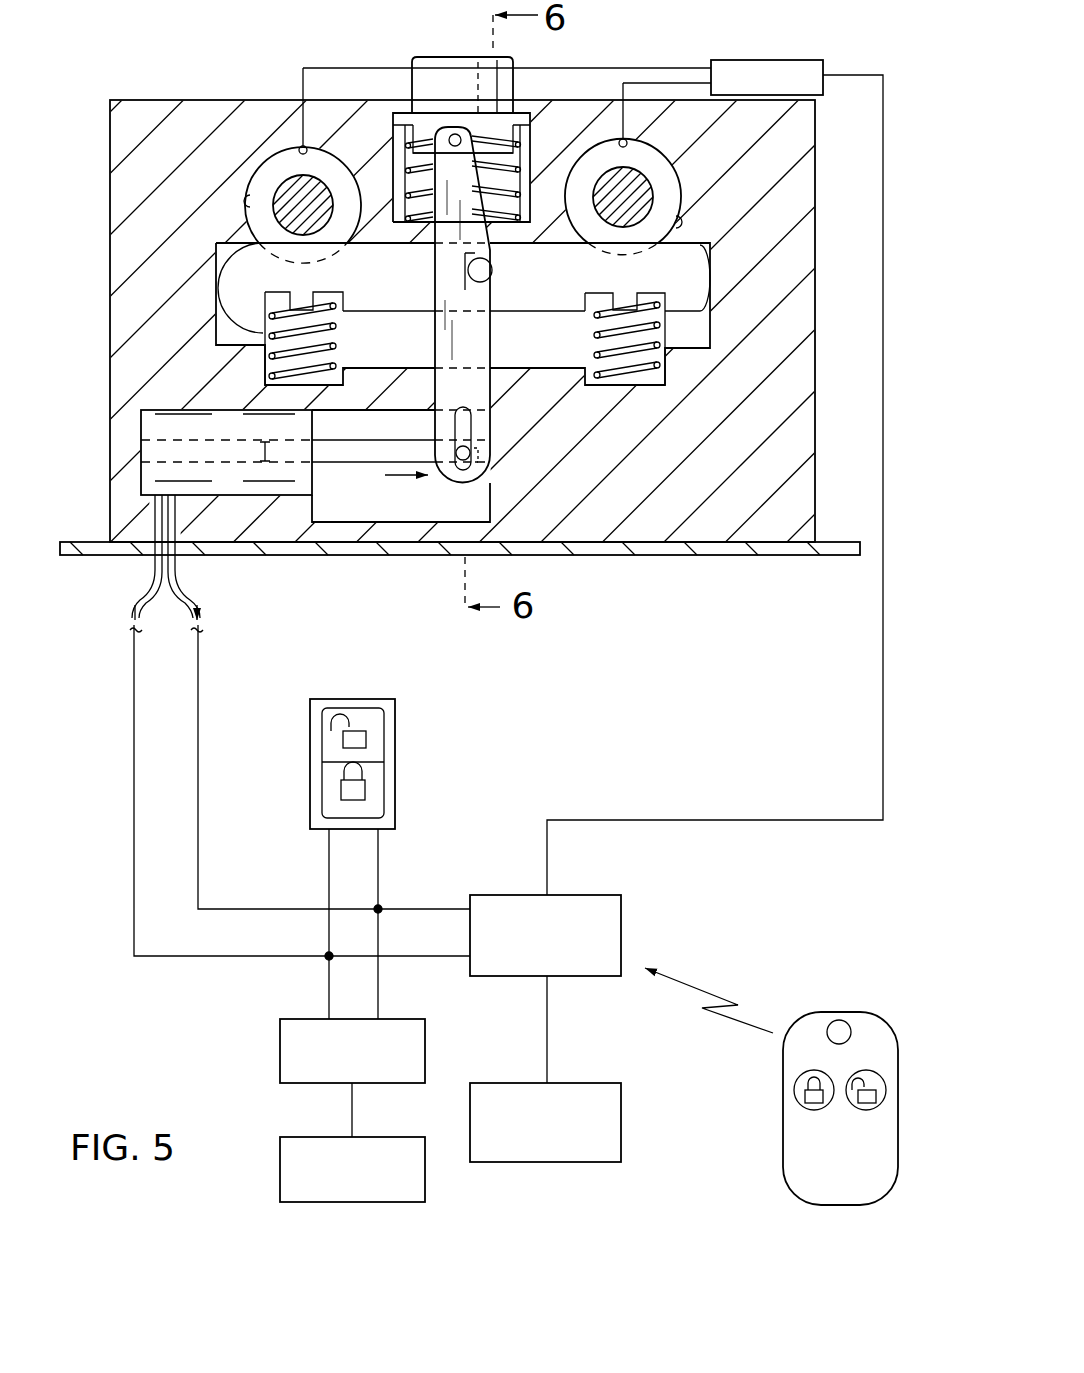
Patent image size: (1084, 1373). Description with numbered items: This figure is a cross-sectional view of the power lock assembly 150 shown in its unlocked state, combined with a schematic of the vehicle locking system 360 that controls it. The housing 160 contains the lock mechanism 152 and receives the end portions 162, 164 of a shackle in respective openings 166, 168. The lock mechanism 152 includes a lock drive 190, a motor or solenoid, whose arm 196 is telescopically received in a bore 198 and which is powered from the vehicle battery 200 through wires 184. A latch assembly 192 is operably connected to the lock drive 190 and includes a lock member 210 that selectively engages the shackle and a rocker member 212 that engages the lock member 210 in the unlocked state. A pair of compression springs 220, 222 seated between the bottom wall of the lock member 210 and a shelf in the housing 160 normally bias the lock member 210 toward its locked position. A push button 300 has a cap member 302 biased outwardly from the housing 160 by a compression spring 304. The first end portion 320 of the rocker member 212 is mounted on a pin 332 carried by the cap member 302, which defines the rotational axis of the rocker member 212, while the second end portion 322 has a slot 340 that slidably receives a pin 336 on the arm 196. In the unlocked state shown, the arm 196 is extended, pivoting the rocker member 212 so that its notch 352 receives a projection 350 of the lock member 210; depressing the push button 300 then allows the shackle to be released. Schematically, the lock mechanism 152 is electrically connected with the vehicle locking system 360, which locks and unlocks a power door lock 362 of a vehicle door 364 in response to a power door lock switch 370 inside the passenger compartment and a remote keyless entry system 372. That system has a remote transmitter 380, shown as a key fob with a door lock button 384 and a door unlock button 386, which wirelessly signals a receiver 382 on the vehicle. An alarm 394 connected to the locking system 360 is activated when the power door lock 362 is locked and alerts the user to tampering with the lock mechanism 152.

The power lock assembly 150 is at (183, 88).
The lock mechanism 152 is at (208, 282).
The housing 160 is at (122, 143).
The shackle end portion 162 is at (266, 155).
The shackle end portion 164 is at (680, 183).
The opening 166 is at (248, 198).
The opening 168 is at (681, 222).
The wires 184 is at (205, 610).
The lock drive 190 is at (143, 480).
The latch assembly 192 is at (637, 388).
The arm 196 is at (340, 455).
The bore 198 is at (148, 447).
The vehicle battery 200 is at (622, 1128).
The lock member 210 is at (702, 275).
The rocker member 212 is at (488, 384).
The compression spring 220 is at (270, 330).
The compression spring 222 is at (668, 330).
The push button 300 is at (410, 62).
The cap member 302 is at (515, 62).
The compression spring 304 is at (537, 152).
The first end portion 320 is at (447, 135).
The second end portion 322 is at (483, 418).
The pin 332 is at (457, 127).
The pin 336 is at (469, 455).
The slot 340 is at (468, 430).
The projection 350 is at (494, 267).
The notch 352 is at (492, 281).
The vehicle locking system 360 is at (503, 782).
The power door lock 362 is at (426, 1038).
The vehicle door 364 is at (312, 1136).
The power door lock switch 370 is at (396, 718).
The remote keyless entry system 372 is at (764, 960).
The remote transmitter 380 is at (871, 1015).
The receiver 382 is at (622, 920).
The door lock button 384 is at (795, 1093).
The door unlock button 386 is at (850, 1097).
The alarm 394 is at (760, 60).